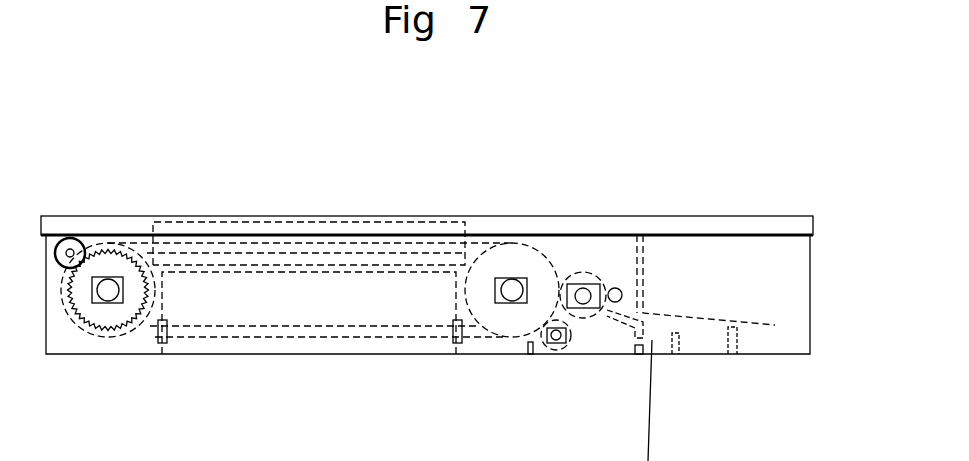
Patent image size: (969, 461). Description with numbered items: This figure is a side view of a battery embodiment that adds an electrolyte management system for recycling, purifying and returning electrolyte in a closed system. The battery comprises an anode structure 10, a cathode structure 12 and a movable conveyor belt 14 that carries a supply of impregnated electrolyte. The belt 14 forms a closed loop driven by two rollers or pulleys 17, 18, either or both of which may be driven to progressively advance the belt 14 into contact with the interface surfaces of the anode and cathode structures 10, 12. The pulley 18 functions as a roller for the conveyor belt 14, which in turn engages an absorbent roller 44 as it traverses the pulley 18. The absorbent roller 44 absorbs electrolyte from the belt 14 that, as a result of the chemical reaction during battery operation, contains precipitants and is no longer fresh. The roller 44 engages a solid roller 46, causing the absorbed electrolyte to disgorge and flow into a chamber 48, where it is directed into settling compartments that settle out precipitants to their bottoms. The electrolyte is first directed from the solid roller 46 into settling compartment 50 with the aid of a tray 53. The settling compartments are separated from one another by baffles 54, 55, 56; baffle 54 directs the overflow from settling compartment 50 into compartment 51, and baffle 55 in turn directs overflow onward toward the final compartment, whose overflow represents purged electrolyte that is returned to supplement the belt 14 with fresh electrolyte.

The anode structure 10 is at (254, 223).
The cathode structure 12 is at (203, 265).
The movable conveyor belt 14 is at (147, 253).
The roller or pulley 17 is at (93, 256).
The pulley 18 is at (513, 253).
The absorbent roller 44 is at (583, 272).
The solid roller 46 is at (615, 288).
The chamber 48 is at (766, 268).
The settling compartment 50 is at (775, 345).
The settling compartment 51 is at (700, 345).
The tray 53 is at (700, 318).
The baffle 54 is at (734, 343).
The baffle 55 is at (676, 343).
The baffle 56 is at (638, 355).